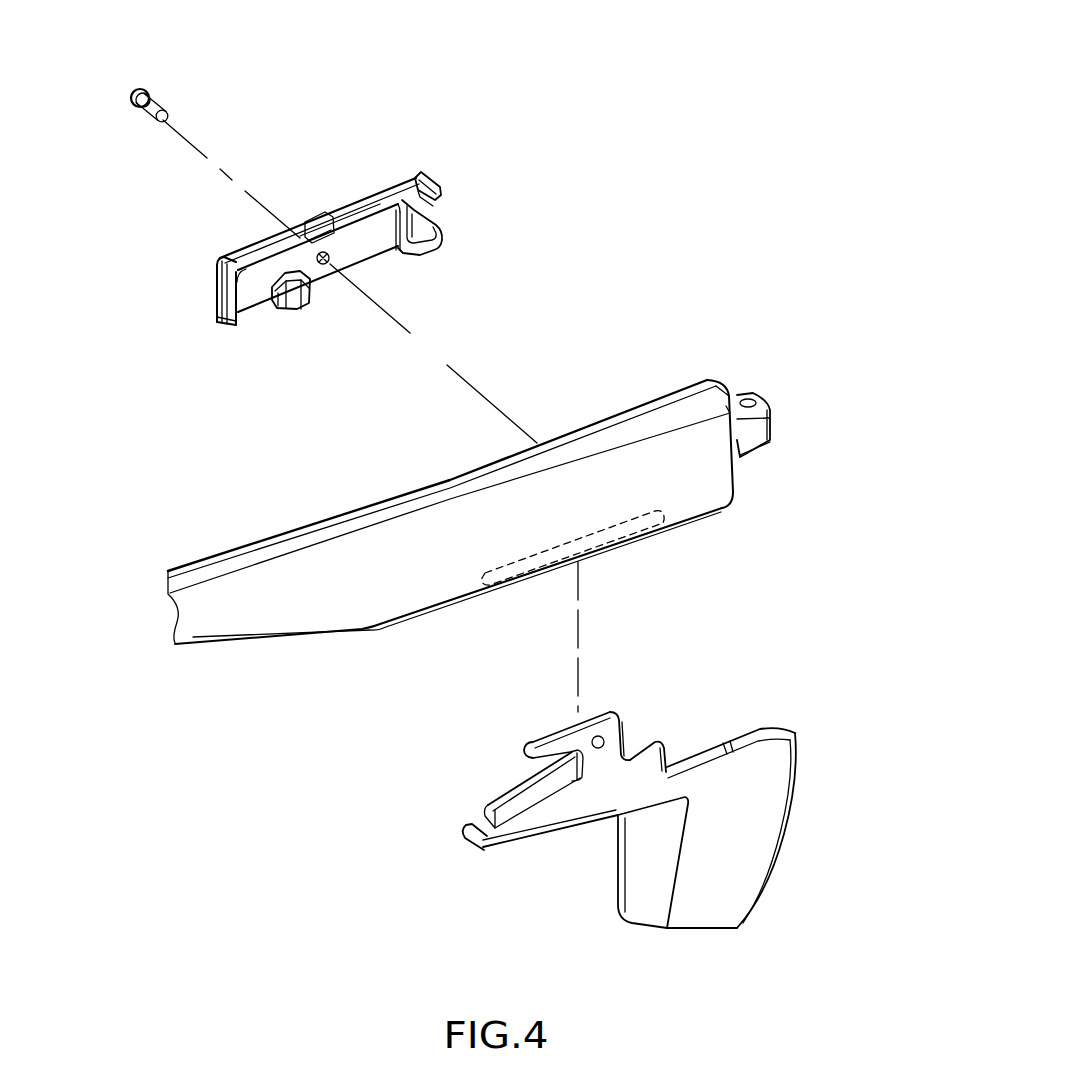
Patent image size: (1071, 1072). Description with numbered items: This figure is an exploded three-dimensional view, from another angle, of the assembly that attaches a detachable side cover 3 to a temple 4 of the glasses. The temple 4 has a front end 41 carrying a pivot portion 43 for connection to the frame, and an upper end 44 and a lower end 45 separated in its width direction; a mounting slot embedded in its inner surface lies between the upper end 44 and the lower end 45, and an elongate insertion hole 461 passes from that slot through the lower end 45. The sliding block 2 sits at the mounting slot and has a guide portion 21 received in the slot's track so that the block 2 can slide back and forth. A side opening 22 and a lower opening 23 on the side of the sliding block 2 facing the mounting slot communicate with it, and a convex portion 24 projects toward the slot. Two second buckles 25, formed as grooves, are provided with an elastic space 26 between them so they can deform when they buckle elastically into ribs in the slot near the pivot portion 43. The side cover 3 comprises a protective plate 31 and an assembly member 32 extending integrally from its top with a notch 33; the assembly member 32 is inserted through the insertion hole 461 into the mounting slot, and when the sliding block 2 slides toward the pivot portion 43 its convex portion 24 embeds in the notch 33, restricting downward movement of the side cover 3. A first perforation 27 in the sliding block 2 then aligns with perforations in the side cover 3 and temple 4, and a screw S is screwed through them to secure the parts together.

The screw S is at (160, 94).
The sliding block 2 is at (341, 241).
The guide portion 21 is at (248, 243).
The side opening 22 is at (372, 256).
The lower opening 23 is at (257, 315).
The convex portion 24 is at (296, 298).
The second buckle 25 is at (417, 176).
The elastic space 26 is at (432, 218).
The first perforation 27 is at (320, 217).
The temple 4 is at (505, 511).
The front end 41 is at (716, 380).
The pivot portion 43 is at (742, 393).
The upper end 44 is at (628, 420).
The lower end 45 is at (443, 607).
The insertion hole 461 is at (638, 540).
The side cover 3 is at (605, 856).
The protective plate 31 is at (657, 882).
The assembly member 32 is at (655, 740).
The notch 33 is at (547, 772).